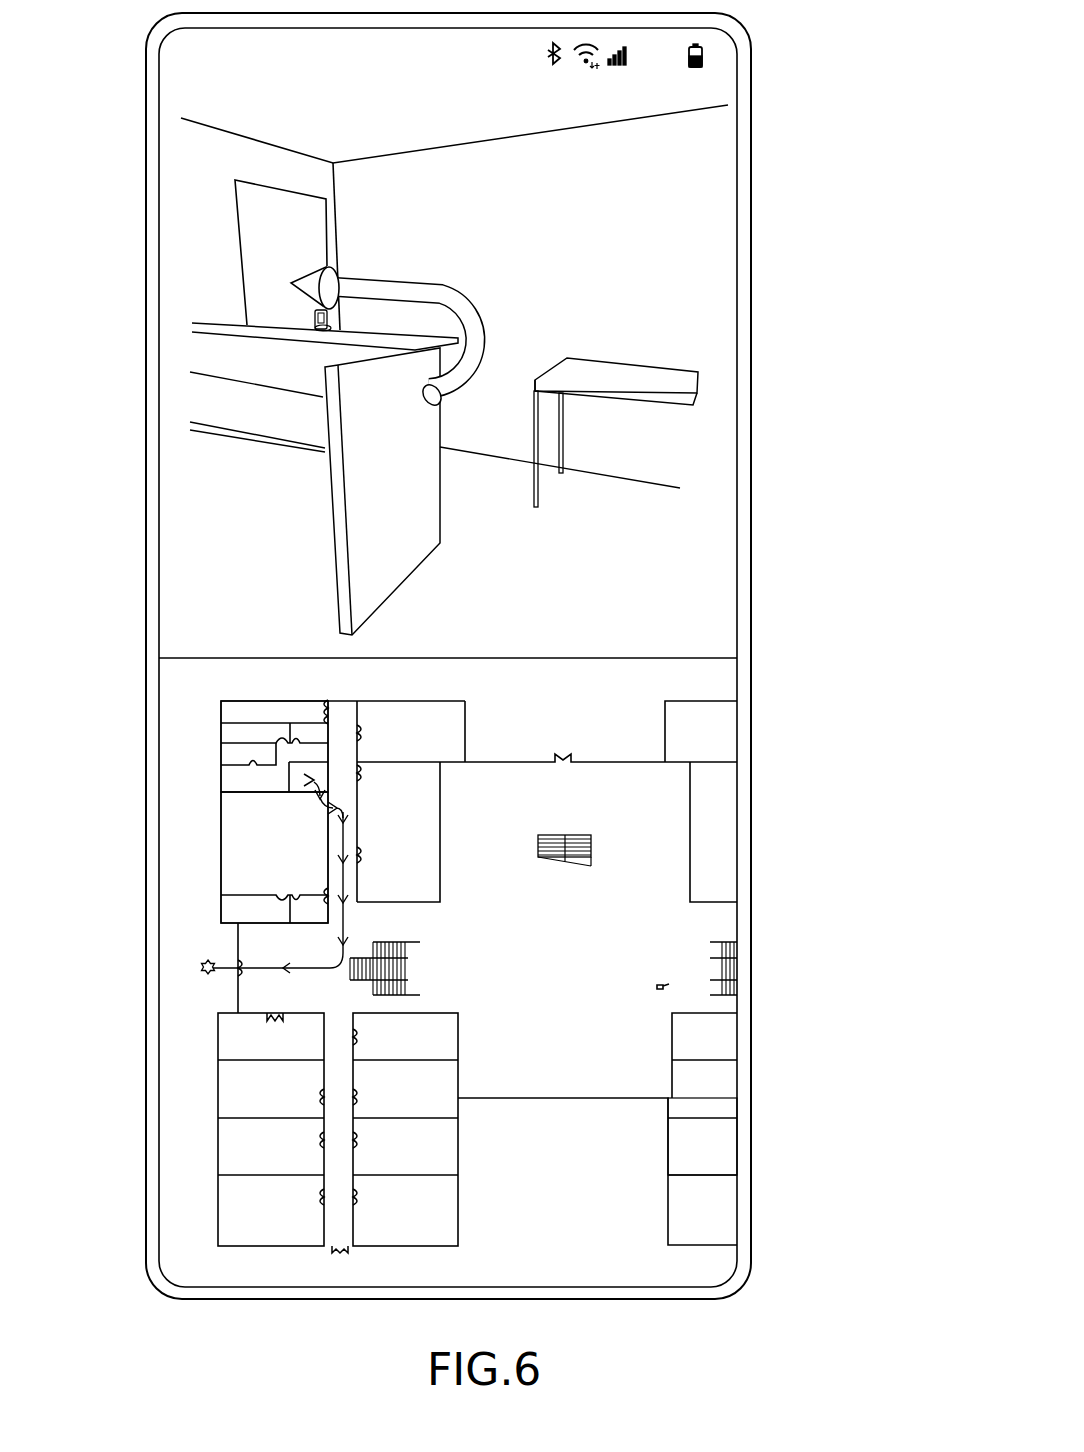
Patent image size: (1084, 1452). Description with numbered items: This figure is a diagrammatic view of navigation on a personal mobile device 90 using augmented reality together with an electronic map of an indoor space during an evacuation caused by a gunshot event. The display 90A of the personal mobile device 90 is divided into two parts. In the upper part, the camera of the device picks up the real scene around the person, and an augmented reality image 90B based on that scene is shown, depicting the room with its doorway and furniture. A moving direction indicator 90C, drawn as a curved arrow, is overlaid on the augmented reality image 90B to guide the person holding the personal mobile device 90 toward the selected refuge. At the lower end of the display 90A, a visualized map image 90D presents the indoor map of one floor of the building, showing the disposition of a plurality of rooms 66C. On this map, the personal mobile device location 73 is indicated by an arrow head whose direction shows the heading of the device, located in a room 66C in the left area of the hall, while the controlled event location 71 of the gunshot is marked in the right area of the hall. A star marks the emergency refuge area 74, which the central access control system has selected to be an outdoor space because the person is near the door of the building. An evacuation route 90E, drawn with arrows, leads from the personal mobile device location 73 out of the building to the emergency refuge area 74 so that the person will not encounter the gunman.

The room 66C is at (628, 246).
The controlled event location 71 is at (665, 985).
The personal mobile device location 73 is at (308, 780).
The emergency refuge area 74 is at (203, 970).
The personal mobile device 90 is at (752, 388).
The display 90A is at (857, 479).
The augmented reality image 90B is at (650, 515).
The moving direction indicator 90C is at (497, 330).
The visualized map image 90D is at (633, 730).
The evacuation route 90E is at (268, 965).